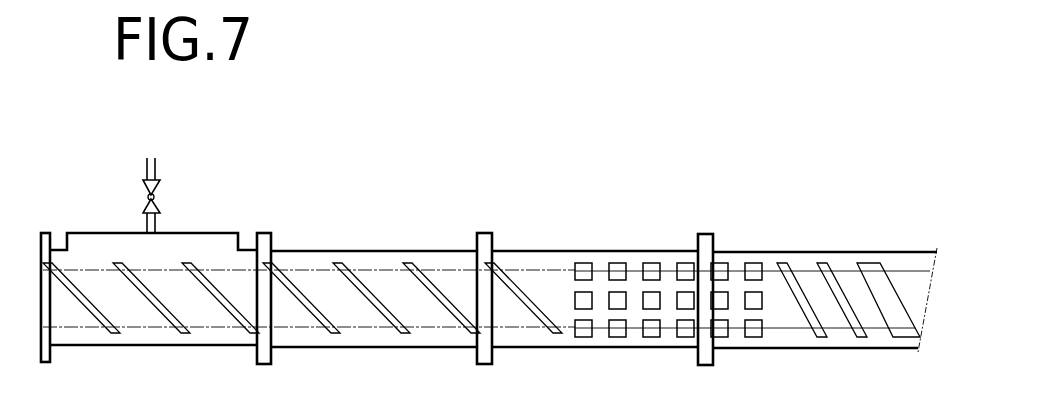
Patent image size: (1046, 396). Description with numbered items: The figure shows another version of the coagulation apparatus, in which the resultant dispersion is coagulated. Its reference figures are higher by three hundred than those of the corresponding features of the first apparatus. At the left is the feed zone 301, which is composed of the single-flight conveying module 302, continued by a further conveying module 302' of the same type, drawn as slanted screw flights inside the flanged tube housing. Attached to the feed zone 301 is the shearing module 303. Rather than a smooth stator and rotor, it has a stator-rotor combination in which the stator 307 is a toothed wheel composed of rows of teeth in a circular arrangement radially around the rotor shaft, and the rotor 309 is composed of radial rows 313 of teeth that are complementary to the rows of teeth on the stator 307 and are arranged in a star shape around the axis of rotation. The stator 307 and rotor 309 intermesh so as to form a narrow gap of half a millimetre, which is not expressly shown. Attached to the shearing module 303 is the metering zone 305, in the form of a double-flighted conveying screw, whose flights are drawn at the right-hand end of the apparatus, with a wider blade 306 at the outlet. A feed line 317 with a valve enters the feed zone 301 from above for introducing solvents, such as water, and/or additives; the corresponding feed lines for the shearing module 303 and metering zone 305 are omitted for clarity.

The feed zone 301 is at (278, 232).
The single-flight conveying module 302 is at (151, 249).
The single-flight conveying module 302' is at (412, 257).
The shearing module 303 is at (669, 233).
The metering zone 305 is at (819, 243).
The discharge blade 306 is at (850, 288).
The stator 307 is at (632, 255).
The rotor 309 is at (606, 288).
The radial rows of teeth 313 is at (577, 325).
The feed line 317 is at (150, 172).